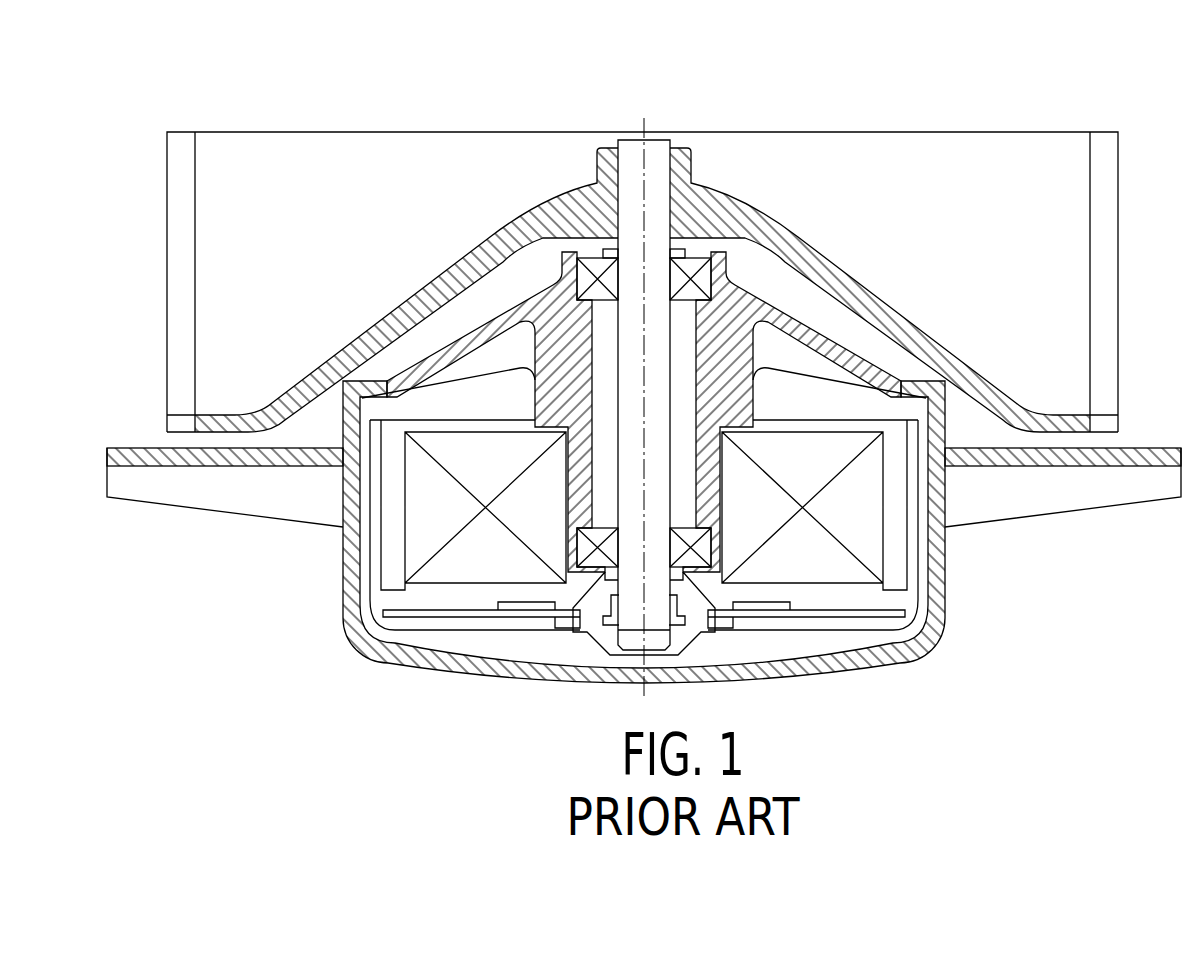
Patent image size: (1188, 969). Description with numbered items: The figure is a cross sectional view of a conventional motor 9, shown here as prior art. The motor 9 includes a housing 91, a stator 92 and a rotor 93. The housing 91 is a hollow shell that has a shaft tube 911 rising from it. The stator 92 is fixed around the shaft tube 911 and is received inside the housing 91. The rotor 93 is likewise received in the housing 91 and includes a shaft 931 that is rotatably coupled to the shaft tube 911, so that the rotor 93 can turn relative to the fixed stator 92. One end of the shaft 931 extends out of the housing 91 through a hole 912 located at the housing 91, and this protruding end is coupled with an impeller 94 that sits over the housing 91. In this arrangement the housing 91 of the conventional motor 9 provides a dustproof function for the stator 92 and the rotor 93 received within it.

The conventional motor 9 is at (1090, 84).
The housing 91 is at (977, 588).
The shaft tube 911 is at (717, 480).
The hole 912 is at (696, 252).
The stator 92 is at (838, 570).
The rotor 93 is at (452, 656).
The shaft 931 is at (628, 462).
The impeller 94 is at (870, 148).